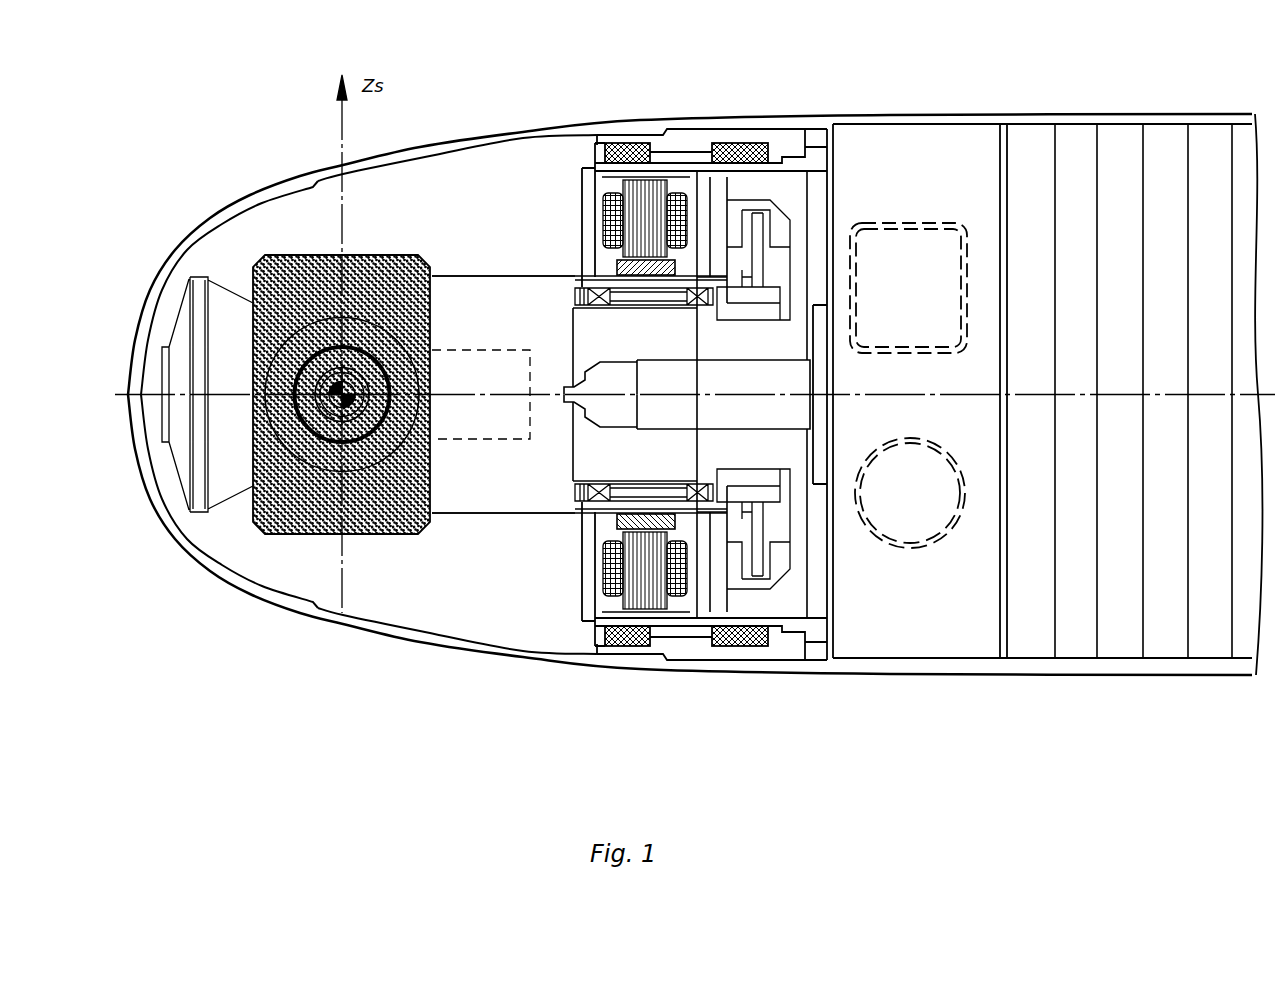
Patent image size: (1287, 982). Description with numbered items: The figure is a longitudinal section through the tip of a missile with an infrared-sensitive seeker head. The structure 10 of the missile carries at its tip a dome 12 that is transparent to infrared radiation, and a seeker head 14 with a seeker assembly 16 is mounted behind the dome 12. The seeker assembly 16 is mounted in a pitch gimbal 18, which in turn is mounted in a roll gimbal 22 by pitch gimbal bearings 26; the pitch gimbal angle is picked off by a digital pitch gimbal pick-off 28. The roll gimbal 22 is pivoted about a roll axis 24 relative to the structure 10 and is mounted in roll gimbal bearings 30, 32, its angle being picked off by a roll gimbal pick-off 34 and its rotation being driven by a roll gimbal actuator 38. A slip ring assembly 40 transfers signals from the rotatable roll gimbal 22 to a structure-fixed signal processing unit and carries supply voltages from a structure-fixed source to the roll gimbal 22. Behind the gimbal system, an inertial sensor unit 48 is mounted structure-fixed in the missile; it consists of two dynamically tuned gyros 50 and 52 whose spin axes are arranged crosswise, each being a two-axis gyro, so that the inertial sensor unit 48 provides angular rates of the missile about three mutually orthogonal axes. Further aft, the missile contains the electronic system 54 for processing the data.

The structure of a missile 10 is at (1080, 118).
The dome 12 is at (178, 540).
The seeker head 14 is at (402, 592).
The seeker assembly 16 is at (203, 477).
The pitch gimbal 18 is at (310, 280).
The roll gimbal 22 is at (642, 283).
The roll axis 24 is at (748, 394).
The pitch gimbal bearings 26 is at (318, 437).
The digital pitch gimbal pick-off 28 is at (340, 473).
The roll gimbal bearing 30 is at (597, 287).
The roll gimbal bearing 32 is at (697, 287).
The roll gimbal pick-off 34 is at (758, 232).
The roll gimbal actuator 38 is at (647, 588).
The slip ring assembly 40 is at (703, 412).
The inertial sensor unit 48 is at (923, 180).
The dynamically tuned gyro 50 is at (942, 273).
The dynamically tuned gyro 52 is at (935, 493).
The electronic system 54 is at (1120, 622).